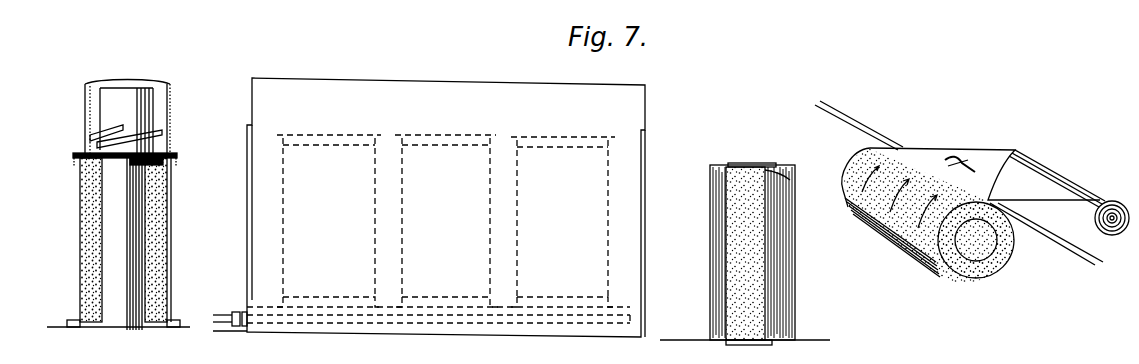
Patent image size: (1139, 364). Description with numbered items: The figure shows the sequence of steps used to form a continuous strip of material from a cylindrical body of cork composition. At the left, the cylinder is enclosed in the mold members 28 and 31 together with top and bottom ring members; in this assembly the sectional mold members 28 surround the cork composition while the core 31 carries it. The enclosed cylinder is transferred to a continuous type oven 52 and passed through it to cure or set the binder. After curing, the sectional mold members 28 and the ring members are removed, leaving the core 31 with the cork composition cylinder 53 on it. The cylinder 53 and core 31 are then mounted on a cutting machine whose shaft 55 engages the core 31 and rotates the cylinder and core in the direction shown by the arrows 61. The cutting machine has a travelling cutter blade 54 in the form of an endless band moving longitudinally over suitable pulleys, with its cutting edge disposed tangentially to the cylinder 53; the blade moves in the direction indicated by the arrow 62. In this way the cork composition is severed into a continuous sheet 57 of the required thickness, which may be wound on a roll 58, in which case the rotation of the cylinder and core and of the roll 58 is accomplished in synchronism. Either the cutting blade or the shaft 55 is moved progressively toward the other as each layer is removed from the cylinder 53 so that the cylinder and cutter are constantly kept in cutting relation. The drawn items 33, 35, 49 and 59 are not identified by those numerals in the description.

The sectional mold members 28 is at (164, 292).
The core 31 is at (146, 243).
The casing 33 is at (168, 118).
The chamber 35 is at (133, 92).
The inclined plate 49 is at (110, 124).
The continuous type oven 52 is at (429, 207).
The cork composition cylinder 53 is at (714, 242).
The travelling cutter blade 54 is at (853, 122).
The shaft 55 is at (972, 243).
The continuous sheet 57 is at (972, 185).
The roll 58 is at (1100, 232).
The belt strand 59 is at (1022, 154).
The arrows 61 is at (900, 180).
The arrow 62 is at (960, 156).